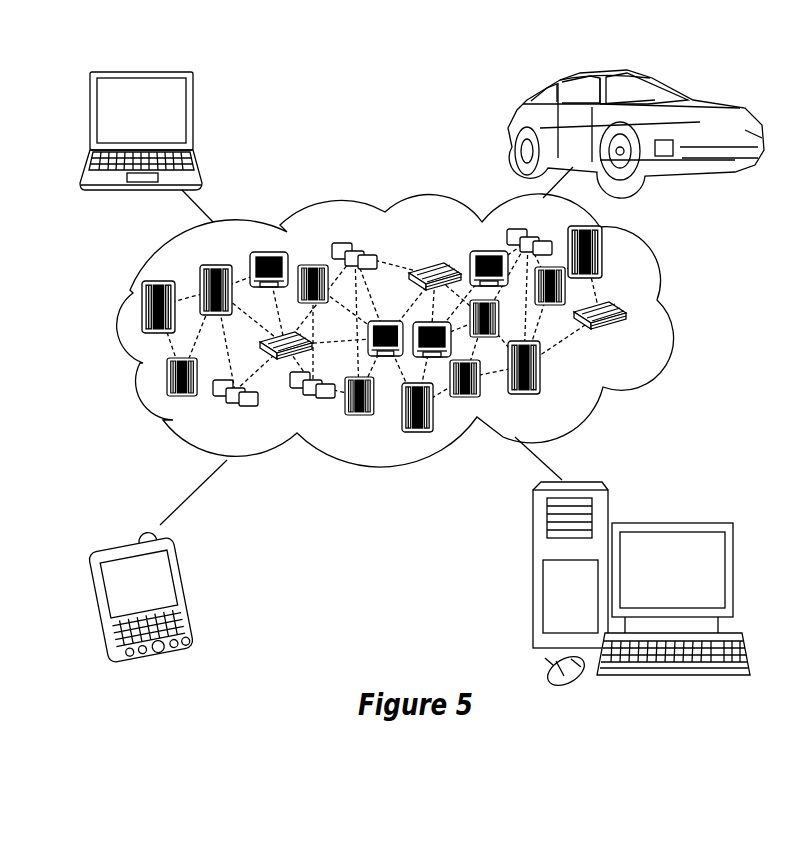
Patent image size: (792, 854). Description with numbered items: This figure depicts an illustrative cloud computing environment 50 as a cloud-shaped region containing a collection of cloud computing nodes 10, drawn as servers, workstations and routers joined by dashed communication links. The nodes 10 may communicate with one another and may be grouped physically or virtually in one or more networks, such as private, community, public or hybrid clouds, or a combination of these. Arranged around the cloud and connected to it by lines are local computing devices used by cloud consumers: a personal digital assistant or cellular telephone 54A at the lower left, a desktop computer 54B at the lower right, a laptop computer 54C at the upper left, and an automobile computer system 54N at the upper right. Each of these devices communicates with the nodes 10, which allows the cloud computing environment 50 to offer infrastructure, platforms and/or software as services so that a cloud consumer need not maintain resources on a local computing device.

The laptop computer 54C is at (194, 116).
The automobile computer system 54N is at (512, 130).
The personal digital assistant or cellular telephone 54A is at (185, 593).
The desktop computer 54B is at (670, 520).
The cloud computing environment 50 is at (670, 318).
The cloud computing nodes 10 is at (636, 339).